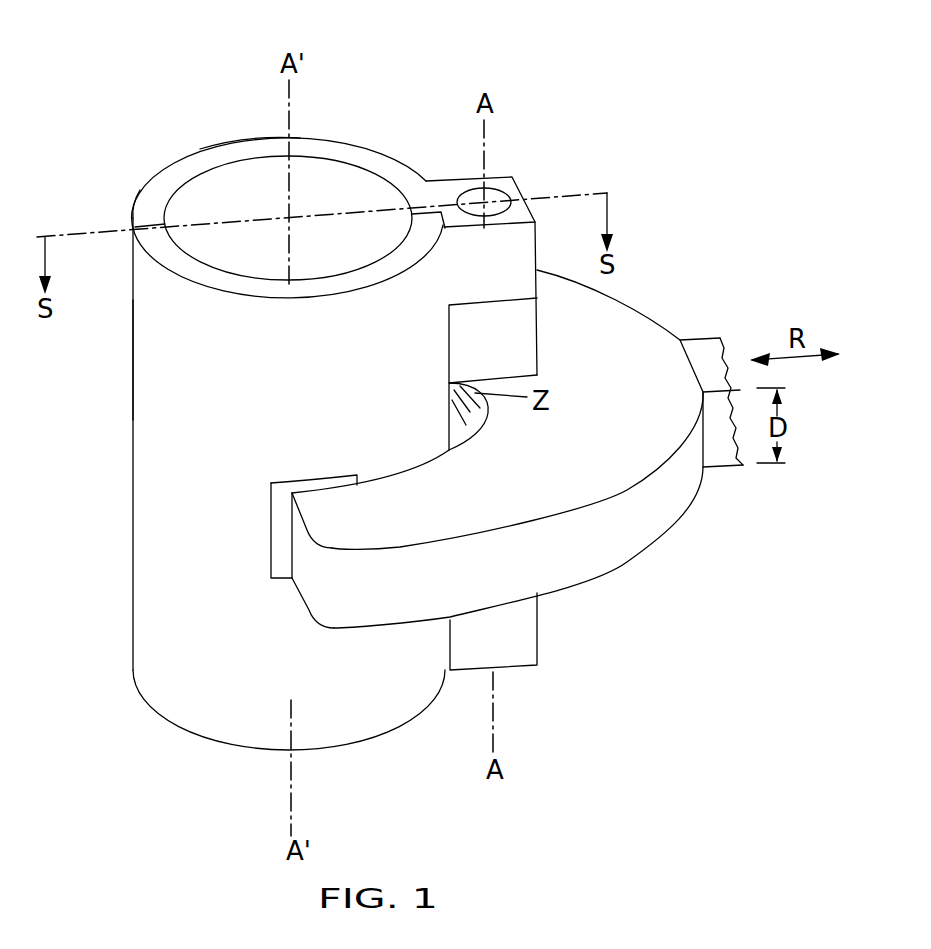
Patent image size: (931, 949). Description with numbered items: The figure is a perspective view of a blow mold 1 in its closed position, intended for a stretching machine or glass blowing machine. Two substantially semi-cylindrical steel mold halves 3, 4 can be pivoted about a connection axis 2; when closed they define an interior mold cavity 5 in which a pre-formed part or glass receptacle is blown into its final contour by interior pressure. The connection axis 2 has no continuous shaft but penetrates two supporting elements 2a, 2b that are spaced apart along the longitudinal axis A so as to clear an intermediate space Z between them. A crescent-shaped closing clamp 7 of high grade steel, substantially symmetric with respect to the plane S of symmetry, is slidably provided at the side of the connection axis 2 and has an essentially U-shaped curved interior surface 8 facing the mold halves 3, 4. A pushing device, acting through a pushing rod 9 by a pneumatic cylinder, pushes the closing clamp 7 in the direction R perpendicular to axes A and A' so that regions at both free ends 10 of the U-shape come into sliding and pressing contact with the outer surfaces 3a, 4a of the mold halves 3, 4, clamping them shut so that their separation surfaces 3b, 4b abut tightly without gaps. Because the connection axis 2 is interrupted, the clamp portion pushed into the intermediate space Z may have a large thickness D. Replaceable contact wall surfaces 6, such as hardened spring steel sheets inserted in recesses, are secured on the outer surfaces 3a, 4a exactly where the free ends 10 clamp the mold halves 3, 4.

The blow mold 1 is at (657, 83).
The connection axis 2 is at (493, 198).
The supporting element 2a is at (520, 246).
The supporting element 2b is at (528, 628).
The mold half 3 is at (323, 150).
The outer surface 3a is at (241, 135).
The separation surface 3b is at (158, 218).
The mold half 4 is at (218, 287).
The outer surface 4a is at (182, 280).
The separation surface 4b is at (153, 230).
The interior mold cavity 5 is at (217, 200).
The contact wall surface 6 is at (285, 563).
The closing clamp 7 is at (658, 303).
The interior surface 8 is at (472, 421).
The pushing rod 9 is at (707, 357).
The free end 10 is at (330, 515).